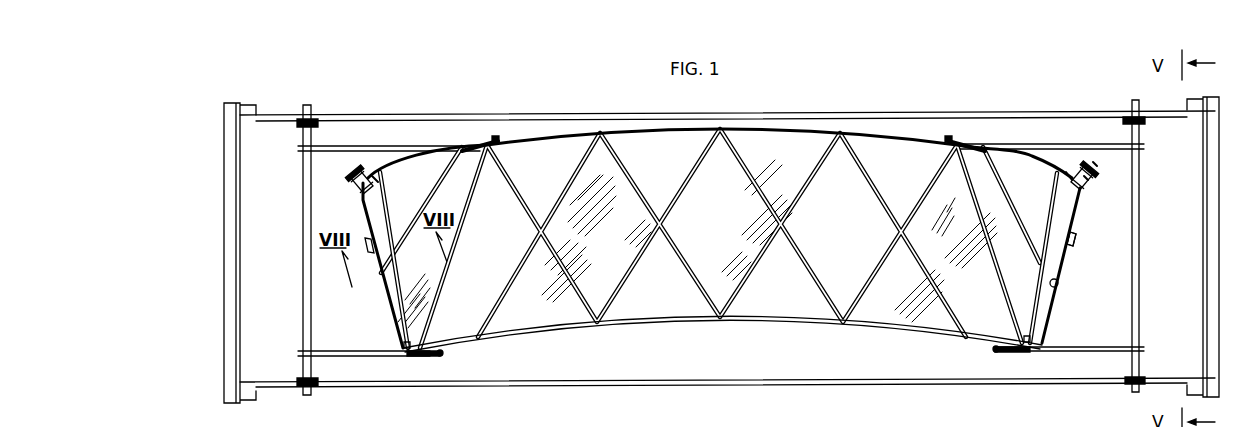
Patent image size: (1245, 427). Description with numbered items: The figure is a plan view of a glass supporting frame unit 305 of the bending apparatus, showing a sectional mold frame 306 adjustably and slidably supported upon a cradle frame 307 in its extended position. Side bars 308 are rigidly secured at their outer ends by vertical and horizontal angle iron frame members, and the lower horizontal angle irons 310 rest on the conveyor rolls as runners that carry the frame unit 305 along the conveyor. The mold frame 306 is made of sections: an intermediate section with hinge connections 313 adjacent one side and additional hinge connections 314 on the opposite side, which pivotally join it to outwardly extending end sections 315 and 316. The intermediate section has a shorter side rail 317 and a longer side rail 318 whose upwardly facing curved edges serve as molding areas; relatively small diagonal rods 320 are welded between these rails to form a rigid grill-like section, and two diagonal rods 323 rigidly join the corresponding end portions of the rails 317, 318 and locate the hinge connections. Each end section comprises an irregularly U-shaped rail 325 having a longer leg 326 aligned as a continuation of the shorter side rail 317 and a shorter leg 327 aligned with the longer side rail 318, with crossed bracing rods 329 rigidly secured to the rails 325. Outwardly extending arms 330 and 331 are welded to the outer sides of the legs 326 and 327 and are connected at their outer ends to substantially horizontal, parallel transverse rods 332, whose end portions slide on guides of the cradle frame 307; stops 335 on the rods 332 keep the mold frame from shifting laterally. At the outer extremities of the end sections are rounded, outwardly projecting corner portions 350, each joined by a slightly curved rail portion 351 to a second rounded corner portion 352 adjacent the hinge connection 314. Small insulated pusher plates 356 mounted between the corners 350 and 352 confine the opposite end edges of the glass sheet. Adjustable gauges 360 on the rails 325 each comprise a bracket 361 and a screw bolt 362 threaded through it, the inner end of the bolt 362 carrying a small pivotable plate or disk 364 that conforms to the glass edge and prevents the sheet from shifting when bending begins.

The glass supporting frame unit 305 is at (243, 325).
The sectional mold frame 306 is at (672, 327).
The cradle frame 307 is at (808, 384).
The side bars 308 is at (580, 114).
The horizontal parallel angle iron frame members 310 is at (235, 283).
The hinge connections 313 is at (490, 138).
The hinge connections 314 is at (420, 358).
The end section 315 is at (393, 326).
The end section 316 is at (1050, 311).
The side rail 317 is at (783, 131).
The side rail 318 is at (763, 324).
The diagonal rods 320 is at (686, 191).
The rods 323 is at (458, 238).
The rails 325 is at (364, 213).
The leg 326 is at (418, 157).
The leg 327 is at (410, 350).
The crossed bracing rods 329 is at (432, 202).
The arm 330 is at (349, 146).
The arm 331 is at (333, 357).
The transverse rods 332 is at (304, 265).
The stops 335 is at (305, 126).
The corner portions 350 is at (1080, 194).
The rail portion 351 is at (1058, 282).
The corner portion 352 is at (1040, 345).
The plates 356 is at (1073, 238).
The adjustable gauges 360 is at (350, 185).
The bracket 361 is at (1086, 177).
The screw bolt 362 is at (1097, 165).
The plate or disk 364 is at (374, 173).